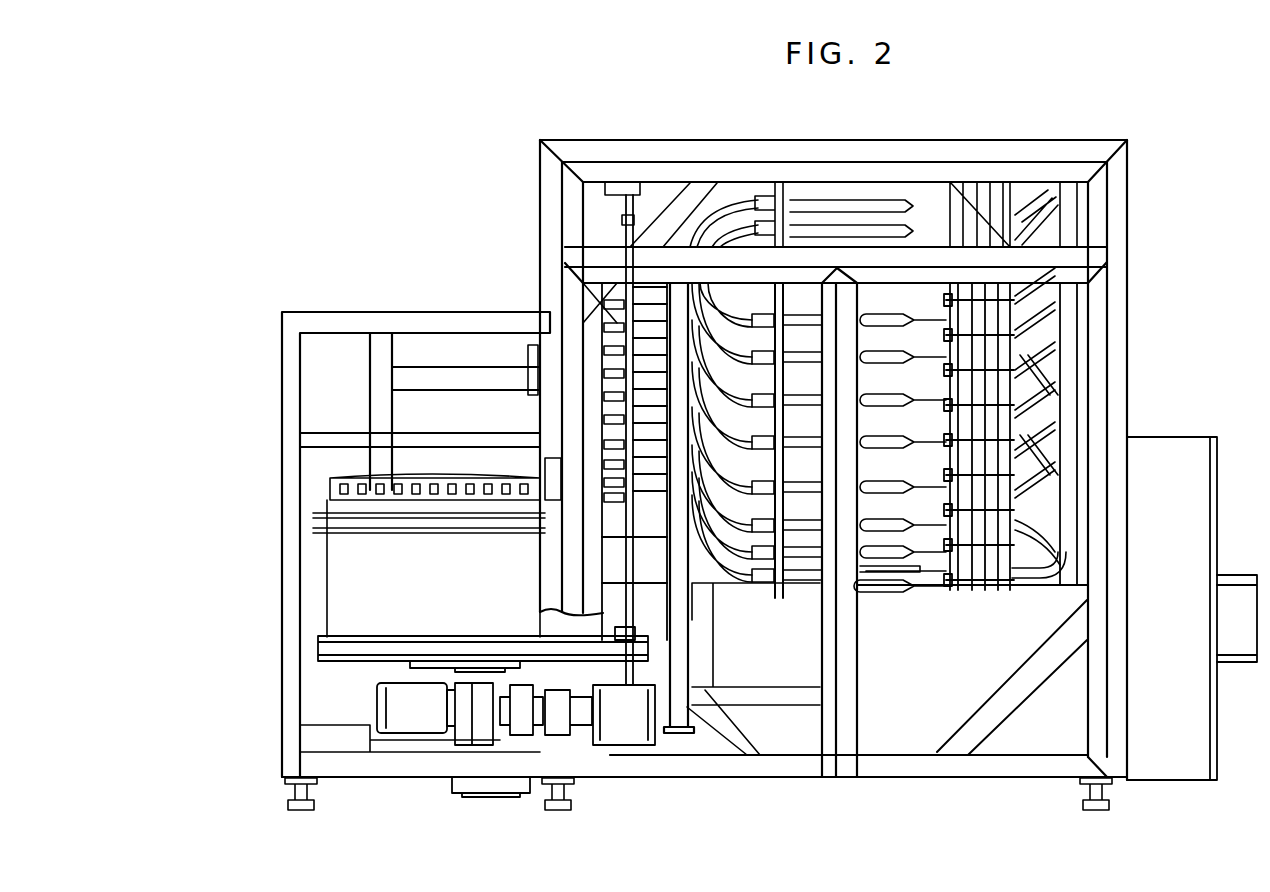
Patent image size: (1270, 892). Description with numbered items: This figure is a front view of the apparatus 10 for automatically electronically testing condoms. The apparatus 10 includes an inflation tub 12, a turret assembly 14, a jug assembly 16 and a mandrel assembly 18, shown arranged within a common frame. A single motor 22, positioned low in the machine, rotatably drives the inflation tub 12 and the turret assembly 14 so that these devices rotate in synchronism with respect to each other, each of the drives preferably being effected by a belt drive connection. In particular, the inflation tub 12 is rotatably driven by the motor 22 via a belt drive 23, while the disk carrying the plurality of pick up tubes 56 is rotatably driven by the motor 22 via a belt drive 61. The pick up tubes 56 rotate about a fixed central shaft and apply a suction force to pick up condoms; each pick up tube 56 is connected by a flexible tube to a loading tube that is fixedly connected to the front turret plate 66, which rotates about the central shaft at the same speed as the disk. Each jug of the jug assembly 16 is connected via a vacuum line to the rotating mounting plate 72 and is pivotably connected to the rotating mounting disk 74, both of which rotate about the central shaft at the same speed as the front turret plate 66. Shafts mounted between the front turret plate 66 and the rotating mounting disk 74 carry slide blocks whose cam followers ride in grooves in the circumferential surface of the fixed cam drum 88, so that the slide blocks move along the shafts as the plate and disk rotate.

The apparatus 10 is at (652, 132).
The inflation tub 12 is at (327, 563).
The turret assembly 14 is at (663, 348).
The jug assembly 16 is at (987, 588).
The mandrel assembly 18 is at (882, 588).
The motor 22 is at (418, 724).
The belt drive 23 is at (374, 648).
The pick up tube 56 is at (610, 426).
The belt drive 61 is at (680, 657).
The front turret plate 66 is at (797, 467).
The rotating mounting plate 72 is at (1085, 365).
The rotating mounting disk 74 is at (950, 502).
The fixed cam drum 88 is at (893, 352).